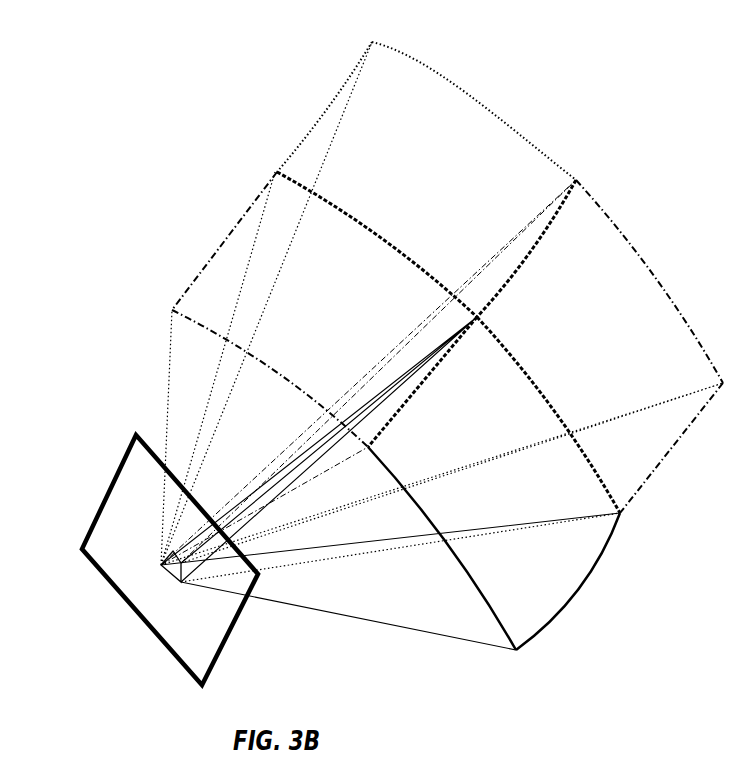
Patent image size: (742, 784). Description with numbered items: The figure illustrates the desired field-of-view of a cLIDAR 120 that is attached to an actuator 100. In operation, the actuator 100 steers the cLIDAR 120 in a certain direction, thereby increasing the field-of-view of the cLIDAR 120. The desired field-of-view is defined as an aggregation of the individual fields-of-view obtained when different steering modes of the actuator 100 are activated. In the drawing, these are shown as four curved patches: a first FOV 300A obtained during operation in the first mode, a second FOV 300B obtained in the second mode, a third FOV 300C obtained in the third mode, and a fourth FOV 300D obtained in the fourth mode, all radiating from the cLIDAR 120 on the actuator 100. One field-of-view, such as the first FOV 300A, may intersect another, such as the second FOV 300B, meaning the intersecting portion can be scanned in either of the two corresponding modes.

The actuator 100 is at (82, 552).
The cLIDAR 120 is at (180, 583).
The first FOV 300A is at (568, 614).
The second FOV 300B is at (641, 219).
The third FOV 300C is at (334, 74).
The fourth FOV 300D is at (214, 224).